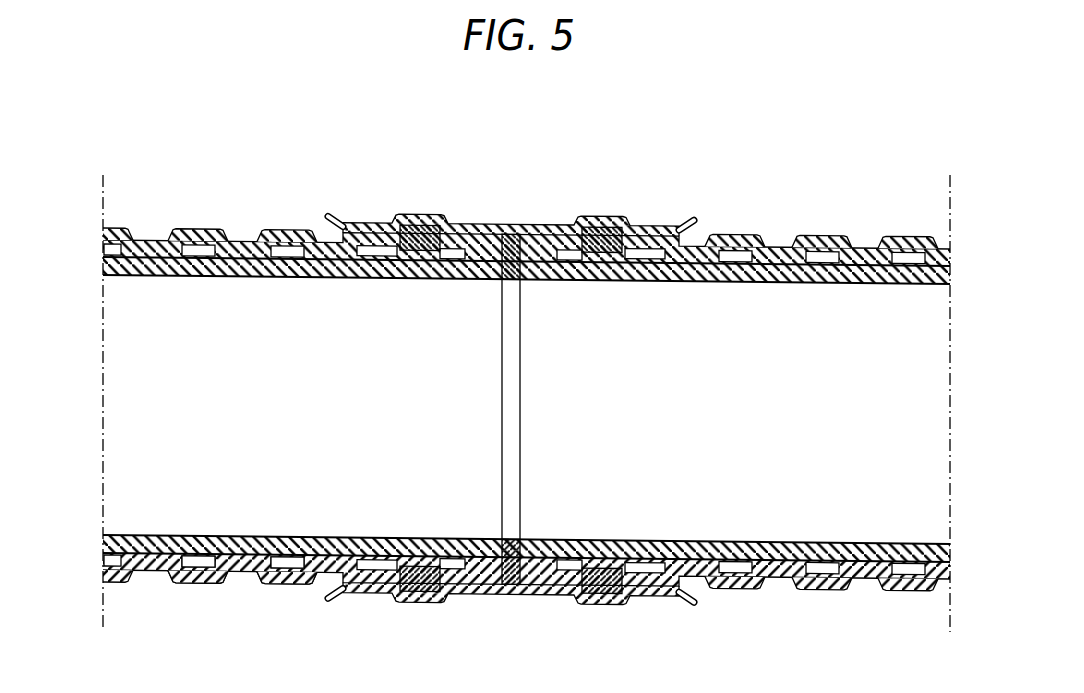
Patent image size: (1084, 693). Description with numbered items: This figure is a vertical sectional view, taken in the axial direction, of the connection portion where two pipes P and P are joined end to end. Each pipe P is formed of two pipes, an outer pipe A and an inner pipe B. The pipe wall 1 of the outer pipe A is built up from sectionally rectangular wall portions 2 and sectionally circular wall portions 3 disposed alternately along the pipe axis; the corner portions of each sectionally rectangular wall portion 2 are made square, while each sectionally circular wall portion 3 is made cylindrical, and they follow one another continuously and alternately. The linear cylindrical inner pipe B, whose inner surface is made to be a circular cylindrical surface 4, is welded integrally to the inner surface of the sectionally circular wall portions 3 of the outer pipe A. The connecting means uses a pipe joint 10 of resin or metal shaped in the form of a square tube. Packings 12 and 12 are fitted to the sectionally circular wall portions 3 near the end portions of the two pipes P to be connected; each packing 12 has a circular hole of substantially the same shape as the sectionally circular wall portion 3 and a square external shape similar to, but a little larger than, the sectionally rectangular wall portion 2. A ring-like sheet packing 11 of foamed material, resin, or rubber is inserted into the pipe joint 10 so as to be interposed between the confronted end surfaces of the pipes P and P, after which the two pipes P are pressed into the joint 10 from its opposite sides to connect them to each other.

The pipe P is at (151, 197).
The pipe wall 1 is at (190, 229).
The sectionally rectangular wall portions 2 is at (300, 229).
The sectionally circular wall portions 3 is at (863, 241).
The circular cylindrical surface 4 is at (741, 305).
The pipe joint 10 is at (476, 226).
The ring-like sheet packing 11 is at (519, 233).
The packing 12 is at (612, 228).
The outer pipe A is at (195, 575).
The inner pipe B is at (283, 560).